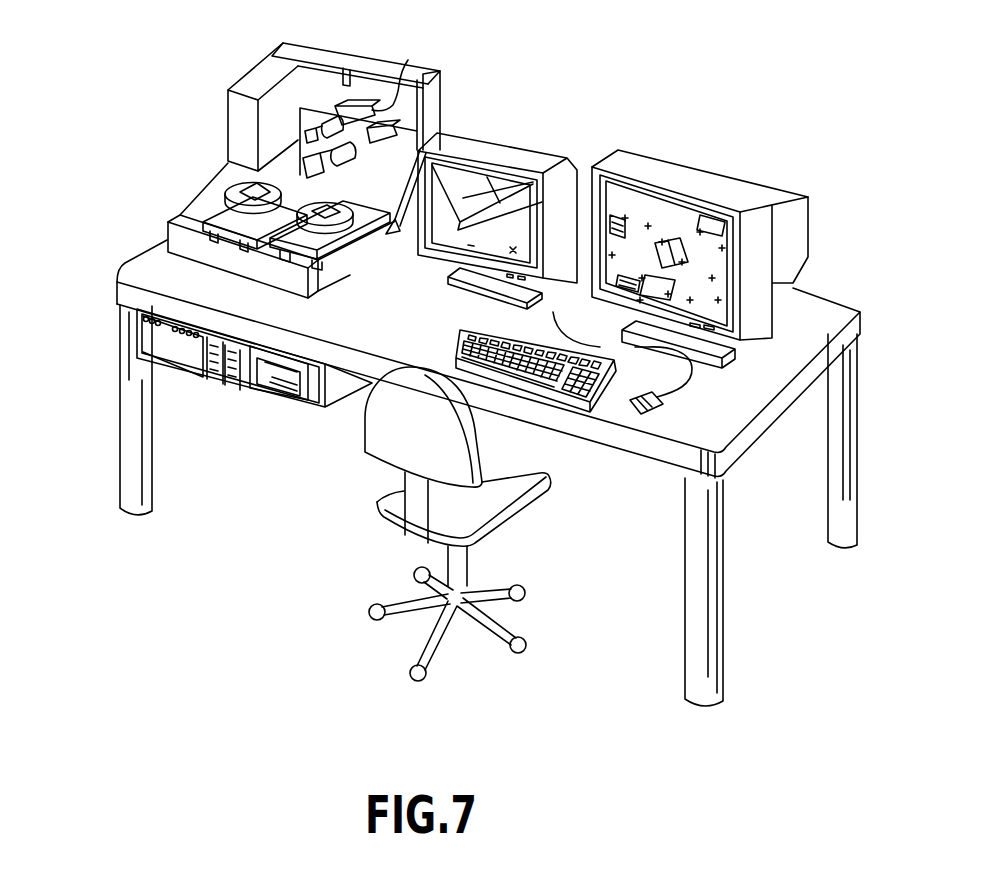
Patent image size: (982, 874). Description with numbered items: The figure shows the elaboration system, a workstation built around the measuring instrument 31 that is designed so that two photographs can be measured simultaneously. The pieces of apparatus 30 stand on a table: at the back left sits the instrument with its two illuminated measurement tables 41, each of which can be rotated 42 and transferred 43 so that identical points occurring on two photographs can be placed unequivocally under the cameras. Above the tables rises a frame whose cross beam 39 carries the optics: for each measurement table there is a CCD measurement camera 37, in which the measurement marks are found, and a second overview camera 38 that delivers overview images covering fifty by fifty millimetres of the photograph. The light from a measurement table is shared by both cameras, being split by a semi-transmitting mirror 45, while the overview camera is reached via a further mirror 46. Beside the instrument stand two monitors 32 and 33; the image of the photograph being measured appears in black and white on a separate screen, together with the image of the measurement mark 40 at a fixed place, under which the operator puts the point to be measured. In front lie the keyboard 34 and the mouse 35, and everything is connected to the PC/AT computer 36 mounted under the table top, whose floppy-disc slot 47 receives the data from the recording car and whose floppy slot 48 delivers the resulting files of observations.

The pieces of apparatus 30 is at (822, 310).
The measuring instrument 31 is at (302, 169).
The monitor 32 is at (509, 219).
The monitor 33 is at (670, 182).
The keyboard 34 is at (589, 412).
The mouse 35 is at (652, 417).
The PC/AT computer 36 is at (217, 386).
The CCD measurement camera 37 is at (432, 77).
The overview camera 38 is at (408, 61).
The cross beam 39 is at (373, 80).
The measurement mark 40 is at (490, 203).
The measurement table 41 is at (255, 190).
The rotation 42 is at (211, 198).
The transfer 43 is at (203, 222).
The semi-transmitting mirror 45 is at (312, 158).
The mirror 46 is at (310, 131).
The floppy-disc slot 47 is at (273, 364).
The floppy slot 48 is at (281, 384).